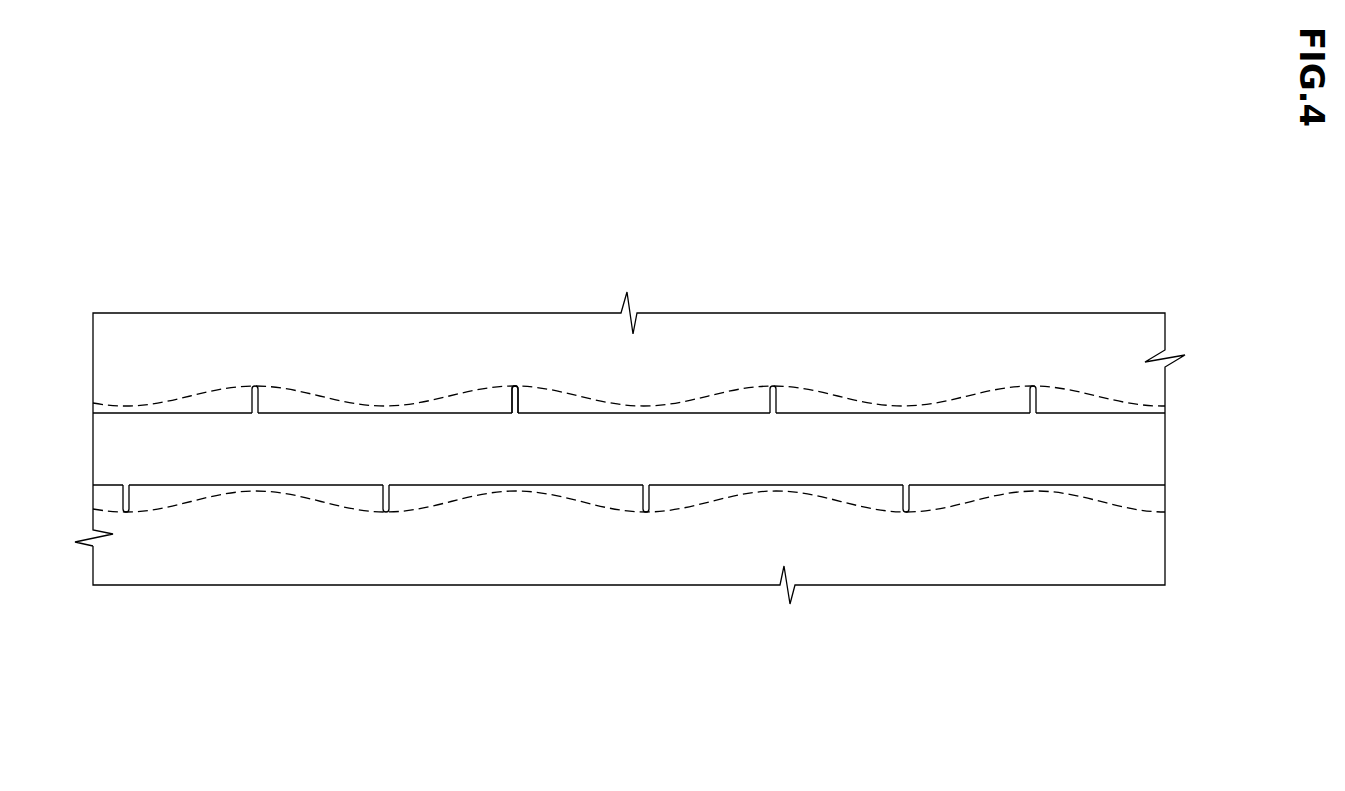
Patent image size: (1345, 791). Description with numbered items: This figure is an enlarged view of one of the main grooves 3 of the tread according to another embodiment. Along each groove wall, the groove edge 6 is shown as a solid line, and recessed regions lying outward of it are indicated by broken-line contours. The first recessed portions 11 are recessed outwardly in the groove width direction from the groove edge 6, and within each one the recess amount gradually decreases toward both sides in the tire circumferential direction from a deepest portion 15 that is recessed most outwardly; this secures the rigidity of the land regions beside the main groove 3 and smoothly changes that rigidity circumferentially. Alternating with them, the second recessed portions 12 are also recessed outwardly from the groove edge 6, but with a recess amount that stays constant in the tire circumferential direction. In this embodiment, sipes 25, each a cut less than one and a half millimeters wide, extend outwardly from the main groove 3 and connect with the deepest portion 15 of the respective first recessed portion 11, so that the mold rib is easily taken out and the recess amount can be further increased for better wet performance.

The main groove 3 is at (1122, 457).
The groove edge 6 is at (1047, 485).
The first recessed portion 11 is at (769, 394).
The second recessed portion 12 is at (255, 491).
The deepest portion 15 is at (512, 387).
The sipe 25 is at (519, 399).